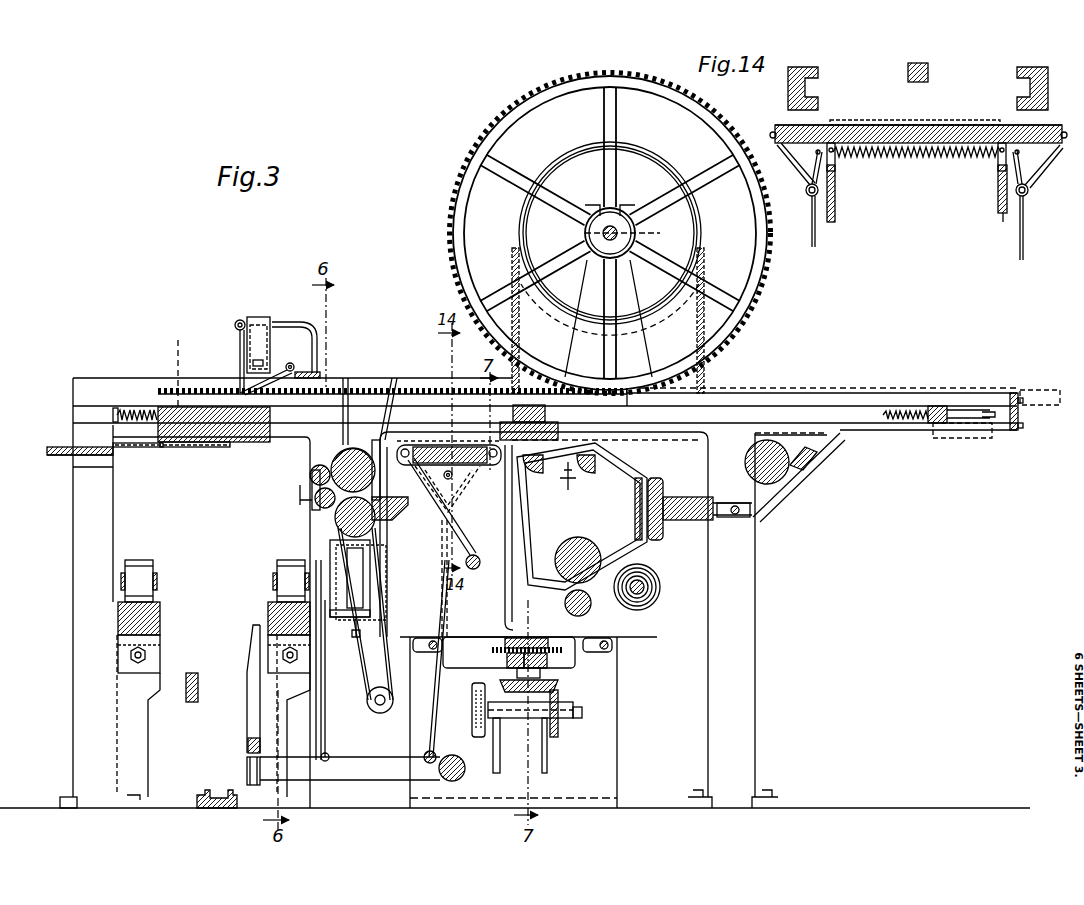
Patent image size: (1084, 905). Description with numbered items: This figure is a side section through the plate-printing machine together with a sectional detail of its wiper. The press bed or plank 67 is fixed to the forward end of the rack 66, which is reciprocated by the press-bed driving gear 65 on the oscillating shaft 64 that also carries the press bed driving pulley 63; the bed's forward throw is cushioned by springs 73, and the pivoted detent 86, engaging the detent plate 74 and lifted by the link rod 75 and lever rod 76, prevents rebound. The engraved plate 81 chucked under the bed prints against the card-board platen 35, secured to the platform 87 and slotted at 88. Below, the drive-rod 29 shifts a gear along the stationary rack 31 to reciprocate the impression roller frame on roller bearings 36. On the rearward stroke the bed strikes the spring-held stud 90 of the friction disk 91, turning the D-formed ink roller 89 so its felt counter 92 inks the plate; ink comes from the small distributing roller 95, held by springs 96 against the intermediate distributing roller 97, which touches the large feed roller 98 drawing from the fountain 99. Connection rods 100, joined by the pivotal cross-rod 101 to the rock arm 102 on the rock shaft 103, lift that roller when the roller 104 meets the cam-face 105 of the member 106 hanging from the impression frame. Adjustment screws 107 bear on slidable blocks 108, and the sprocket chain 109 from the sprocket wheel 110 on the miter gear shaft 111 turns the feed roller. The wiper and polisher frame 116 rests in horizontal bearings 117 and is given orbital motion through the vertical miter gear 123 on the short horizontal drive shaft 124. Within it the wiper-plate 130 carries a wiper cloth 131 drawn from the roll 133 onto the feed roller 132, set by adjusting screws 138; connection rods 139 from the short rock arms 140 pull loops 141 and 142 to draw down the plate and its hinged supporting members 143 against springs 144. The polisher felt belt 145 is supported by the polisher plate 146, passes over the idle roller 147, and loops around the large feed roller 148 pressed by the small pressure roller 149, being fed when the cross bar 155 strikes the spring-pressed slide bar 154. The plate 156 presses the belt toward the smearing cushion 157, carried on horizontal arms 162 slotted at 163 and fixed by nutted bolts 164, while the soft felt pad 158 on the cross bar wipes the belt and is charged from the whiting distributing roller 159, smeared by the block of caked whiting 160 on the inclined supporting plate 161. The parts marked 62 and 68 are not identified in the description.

In FIG. 3, the support or platen 35 is at (52, 446).
In FIG. 3, the roller bearings 36 is at (275, 563).
In FIG. 3, the drive-rod 29 is at (195, 672).
In FIG. 3, the stationary rack 31 is at (197, 798).
In FIG. 3, the standard 62 is at (521, 327).
In FIG. 3, the press bed driving pulley 63 is at (551, 158).
In FIG. 3, the oscillating shaft 64 is at (645, 233).
In FIG. 3, the press-bed driving gear 65 is at (522, 100).
In FIG. 3, the rack 66 is at (405, 388).
In FIG. 14, the rack 66 is at (930, 72).
In FIG. 3, the press bed or plank 67 is at (250, 443).
In FIG. 3, the guide rail 68 is at (100, 403).
In FIG. 14, the guide rail 68 is at (820, 90).
In FIG. 3, the springs 73 is at (138, 405).
In FIG. 3, the detent plate 74 is at (179, 360).
In FIG. 3, the link rod 75 is at (238, 345).
In FIG. 3, the lever rod 76 is at (236, 322).
In FIG. 3, the engraved plate 81 is at (195, 448).
In FIG. 3, the pivoted detent 86 is at (272, 373).
In FIG. 3, the platform 87 is at (62, 456).
In FIG. 3, the slot 88 is at (128, 448).
In FIG. 3, the D-formed ink roller 89 is at (372, 425).
In FIG. 3, the spring-held stud 90 is at (340, 430).
In FIG. 3, the friction disk 91 is at (353, 457).
In FIG. 3, the felt counter 92 is at (380, 470).
In FIG. 3, the small distributing roller 95 is at (315, 490).
In FIG. 3, the springs 96 is at (310, 473).
In FIG. 3, the intermediate distributing roller 97 is at (320, 512).
In FIG. 3, the large feed roller 98 is at (355, 529).
In FIG. 3, the fountain 99 is at (403, 515).
In FIG. 3, the connection rods 100 is at (315, 690).
In FIG. 3, the pivotal cross-rod 101 is at (327, 755).
In FIG. 3, the rock arm 102 is at (350, 768).
In FIG. 3, the rock shaft 103 is at (462, 776).
In FIG. 3, the roller 104 is at (253, 786).
In FIG. 3, the cam-face 105 is at (247, 752).
In FIG. 3, the member 106 is at (255, 713).
In FIG. 3, the adjustment screws 107 is at (353, 637).
In FIG. 3, the vertically slidable blocks 108 is at (365, 562).
In FIG. 3, the sprocket chain 109 is at (386, 605).
In FIG. 3, the sprocket wheel 110 is at (381, 714).
In FIG. 3, the miter gear shaft 111 is at (393, 708).
In FIG. 3, the wiper and polisher frame 116 is at (579, 620).
In FIG. 14, the wiper and polisher frame 116 is at (1003, 222).
In FIG. 3, the horizontal bearings 117 is at (425, 653).
In FIG. 3, the vertical miter gear 123 is at (553, 740).
In FIG. 3, the short horizontal drive shaft 124 is at (575, 712).
In FIG. 3, the wiper-plate 130 is at (462, 440).
In FIG. 14, the wiper-plate 130 is at (780, 125).
In FIG. 3, the wiper cloth 131 is at (440, 446).
In FIG. 14, the wiper cloth 131 is at (925, 125).
In FIG. 3, the feed roller 132 is at (476, 555).
In FIG. 3, the roll 133 is at (660, 589).
In FIG. 3, the adjusting screws 138 is at (440, 470).
In FIG. 14, the adjusting screws 138 is at (838, 165).
In FIG. 3, the connection rods 139 is at (437, 683).
In FIG. 14, the connection rods 139 is at (816, 245).
In FIG. 3, the short rock arms 140 is at (433, 752).
In FIG. 14, the loop 141 is at (797, 172).
In FIG. 14, the loops 142 is at (835, 215).
In FIG. 14, the hinged supporting members 143 is at (836, 178).
In FIG. 3, the springs 144 is at (470, 492).
In FIG. 14, the springs 144 is at (905, 158).
In FIG. 3, the polisher felt belt 145 is at (635, 468).
In FIG. 3, the adjustable polisher plate 146 is at (585, 474).
In FIG. 3, the idle roller 147 is at (540, 475).
In FIG. 3, the large feed roller 148 is at (578, 537).
In FIG. 3, the small pressure roller 149 is at (565, 603).
In FIG. 3, the spring-pressed slide bar 154 is at (930, 425).
In FIG. 3, the cross bar 155 is at (513, 413).
In FIG. 3, the plate 156 is at (650, 540).
In FIG. 3, the smearing cushion 157 is at (650, 480).
In FIG. 3, the soft felt pad 158 is at (565, 436).
In FIG. 3, the whiting distributing roller 159 is at (748, 452).
In FIG. 3, the block of caked whiting 160 is at (812, 460).
In FIG. 3, the inclined supporting plate 161 is at (797, 485).
In FIG. 3, the horizontal arms 162 is at (700, 520).
In FIG. 3, the slot 163 is at (740, 517).
In FIG. 3, the nutted bolt 164 is at (740, 510).